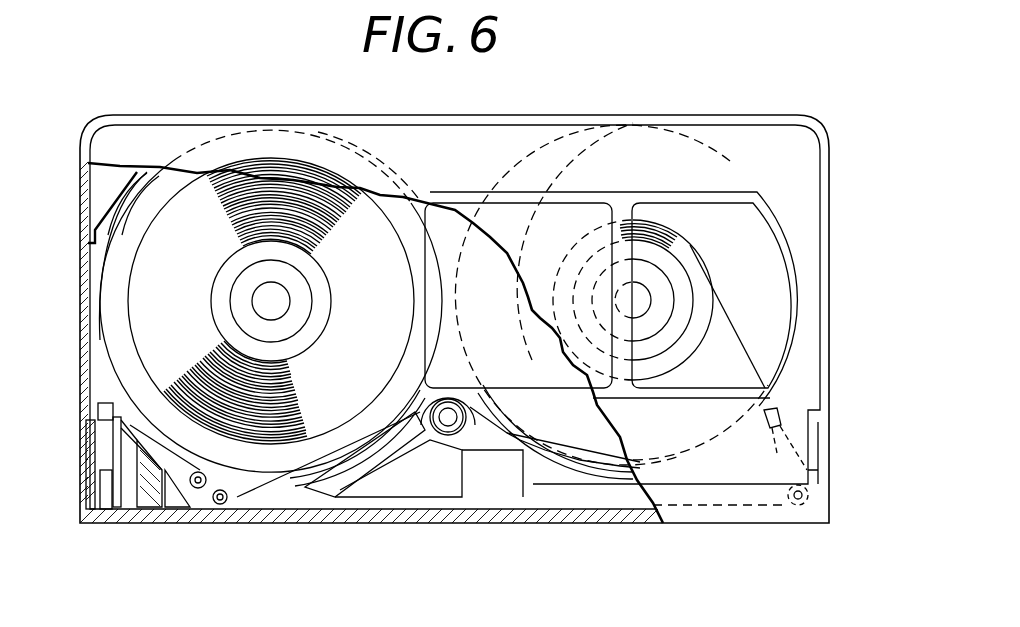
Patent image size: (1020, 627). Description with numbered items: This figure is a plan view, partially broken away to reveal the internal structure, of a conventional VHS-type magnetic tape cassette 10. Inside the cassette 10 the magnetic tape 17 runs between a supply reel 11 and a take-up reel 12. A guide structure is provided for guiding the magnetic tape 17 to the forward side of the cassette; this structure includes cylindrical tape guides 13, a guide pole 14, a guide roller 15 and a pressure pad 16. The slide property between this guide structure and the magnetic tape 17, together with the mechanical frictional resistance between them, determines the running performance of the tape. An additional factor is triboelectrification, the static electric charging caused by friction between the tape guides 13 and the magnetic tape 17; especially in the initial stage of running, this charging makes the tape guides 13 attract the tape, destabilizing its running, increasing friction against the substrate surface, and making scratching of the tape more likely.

The cassette 10 is at (167, 115).
The supply reel 11 is at (175, 183).
The take-up reel 12 is at (490, 257).
The tape guides 13 is at (224, 503).
The guide pole 14 is at (770, 425).
The guide roller 15 is at (199, 488).
The pressure pad 16 is at (800, 398).
The magnetic tape 17 is at (688, 505).